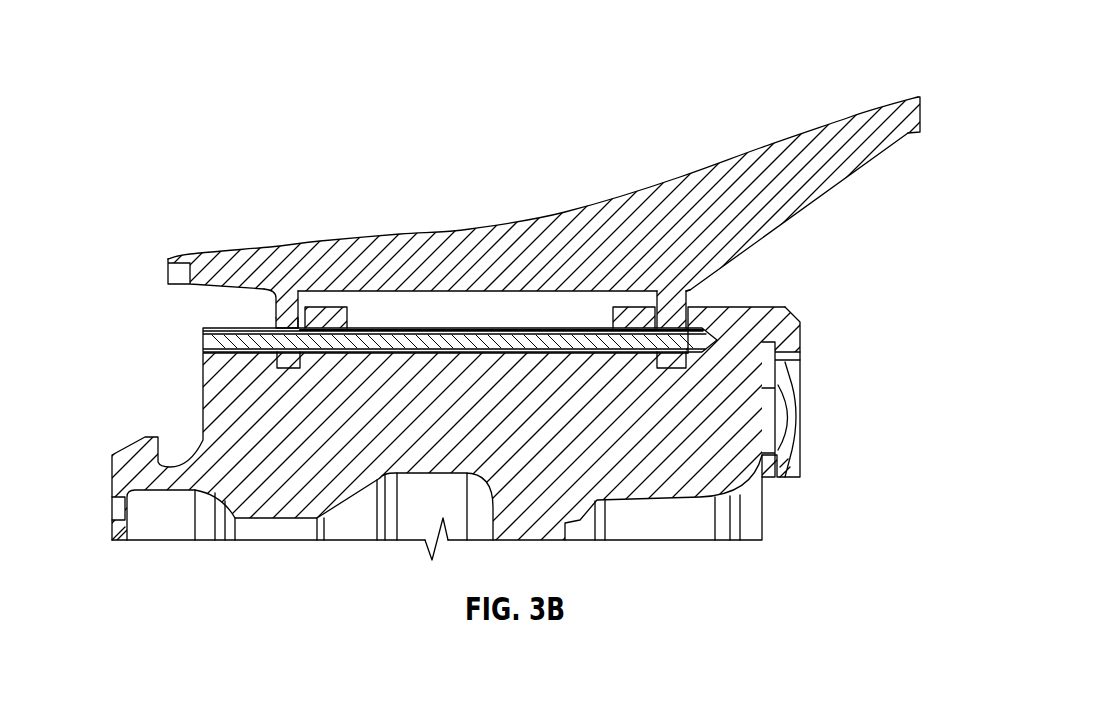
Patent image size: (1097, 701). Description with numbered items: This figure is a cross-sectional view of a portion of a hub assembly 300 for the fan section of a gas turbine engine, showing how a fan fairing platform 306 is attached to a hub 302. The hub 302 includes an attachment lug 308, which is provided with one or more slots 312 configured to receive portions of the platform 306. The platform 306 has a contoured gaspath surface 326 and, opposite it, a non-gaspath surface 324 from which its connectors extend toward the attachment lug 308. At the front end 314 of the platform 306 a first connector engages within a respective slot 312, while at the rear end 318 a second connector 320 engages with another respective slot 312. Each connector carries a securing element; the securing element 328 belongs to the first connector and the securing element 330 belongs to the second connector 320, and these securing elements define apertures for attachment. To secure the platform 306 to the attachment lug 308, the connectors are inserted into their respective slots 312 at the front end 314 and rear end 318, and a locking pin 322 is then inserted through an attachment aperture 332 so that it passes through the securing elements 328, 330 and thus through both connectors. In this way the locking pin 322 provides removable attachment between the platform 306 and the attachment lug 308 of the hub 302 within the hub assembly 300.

The hub assembly 300 is at (205, 92).
The hub 302 is at (107, 481).
The fan fairing platform 306 is at (775, 155).
The attachment lug 308 is at (782, 306).
The slot 312 is at (298, 371).
The front end 314 is at (172, 233).
The rear end 318 is at (914, 96).
The second connector 320 is at (690, 303).
The locking pin 322 is at (528, 340).
The non-gaspath surface 324 is at (455, 300).
The gaspath surface 326 is at (566, 212).
The securing element 328 is at (290, 328).
The securing element 330 is at (672, 328).
The attachment aperture 332 is at (201, 345).